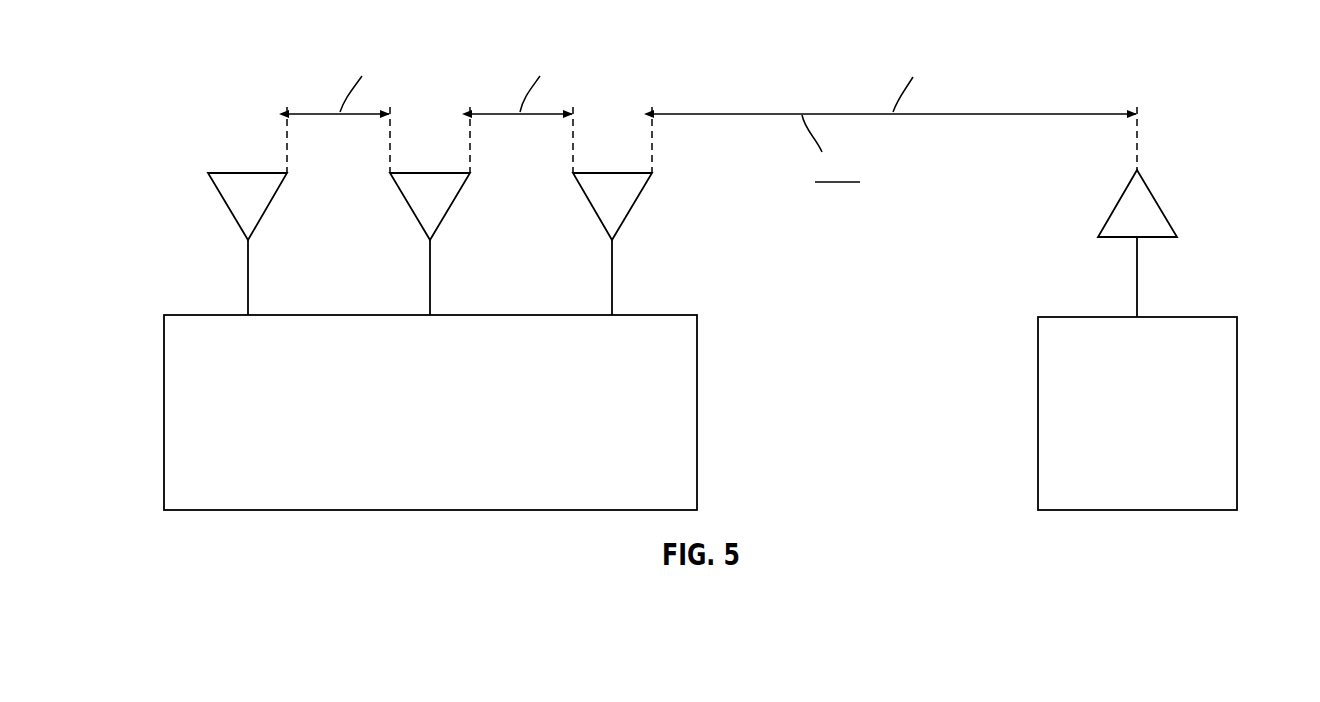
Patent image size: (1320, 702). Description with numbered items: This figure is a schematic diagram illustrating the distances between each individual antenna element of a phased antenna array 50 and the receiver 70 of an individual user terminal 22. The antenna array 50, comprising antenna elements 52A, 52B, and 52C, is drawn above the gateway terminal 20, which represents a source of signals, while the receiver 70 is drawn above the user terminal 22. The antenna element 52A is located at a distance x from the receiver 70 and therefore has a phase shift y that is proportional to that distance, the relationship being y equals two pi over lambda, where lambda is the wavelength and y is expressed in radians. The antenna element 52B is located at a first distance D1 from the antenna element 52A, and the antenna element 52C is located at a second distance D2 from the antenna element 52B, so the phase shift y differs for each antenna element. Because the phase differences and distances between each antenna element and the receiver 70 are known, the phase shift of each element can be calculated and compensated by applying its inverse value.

The gateway terminal 20 is at (698, 413).
The user terminal 22 is at (1238, 413).
The antenna array 50 is at (617, 182).
The antenna element 52A is at (592, 172).
The antenna element 52B is at (412, 172).
The antenna element 52C is at (228, 172).
The receiver 70 is at (1153, 197).